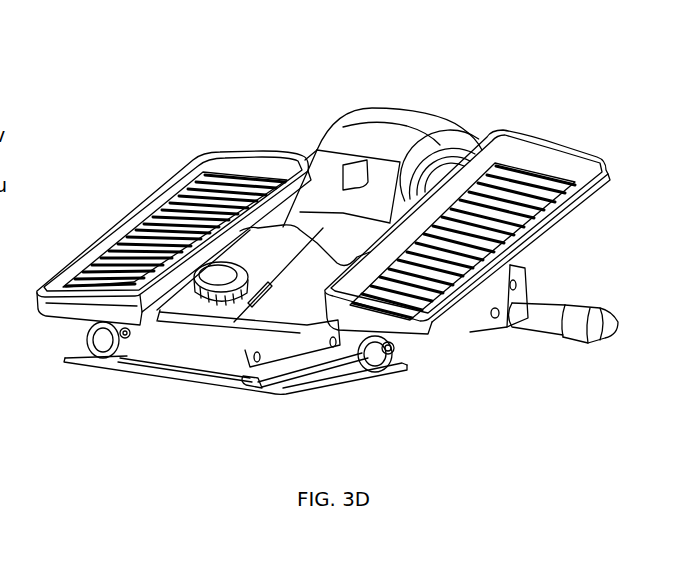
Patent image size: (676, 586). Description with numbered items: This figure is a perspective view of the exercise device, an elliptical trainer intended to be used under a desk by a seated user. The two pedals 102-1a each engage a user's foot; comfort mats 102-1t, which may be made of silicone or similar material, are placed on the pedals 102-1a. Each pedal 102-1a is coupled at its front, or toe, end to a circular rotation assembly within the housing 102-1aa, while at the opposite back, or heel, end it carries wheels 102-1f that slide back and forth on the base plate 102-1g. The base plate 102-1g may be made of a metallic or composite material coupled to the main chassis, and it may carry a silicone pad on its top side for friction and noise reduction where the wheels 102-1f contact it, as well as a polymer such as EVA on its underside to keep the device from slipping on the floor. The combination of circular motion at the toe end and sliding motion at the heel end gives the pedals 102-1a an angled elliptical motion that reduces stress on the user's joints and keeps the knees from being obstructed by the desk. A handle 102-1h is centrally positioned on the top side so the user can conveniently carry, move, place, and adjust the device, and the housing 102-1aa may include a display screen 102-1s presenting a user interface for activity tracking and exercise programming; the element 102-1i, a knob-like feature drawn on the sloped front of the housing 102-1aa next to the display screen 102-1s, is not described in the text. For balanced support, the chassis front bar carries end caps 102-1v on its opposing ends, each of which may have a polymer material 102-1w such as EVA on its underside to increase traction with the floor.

The pedals/footpads 102-1a is at (238, 167).
The comfort mats 102-1t is at (152, 222).
The housing 102-1aa is at (405, 130).
The handle 102-1h is at (341, 177).
The adjustment knob 102-1i is at (218, 282).
The display screen 102-1s is at (262, 297).
The wheels 102-1f is at (102, 338).
The base plate 102-1g is at (283, 393).
The end caps 102-1v is at (570, 323).
The polymer material 102-1w is at (593, 347).